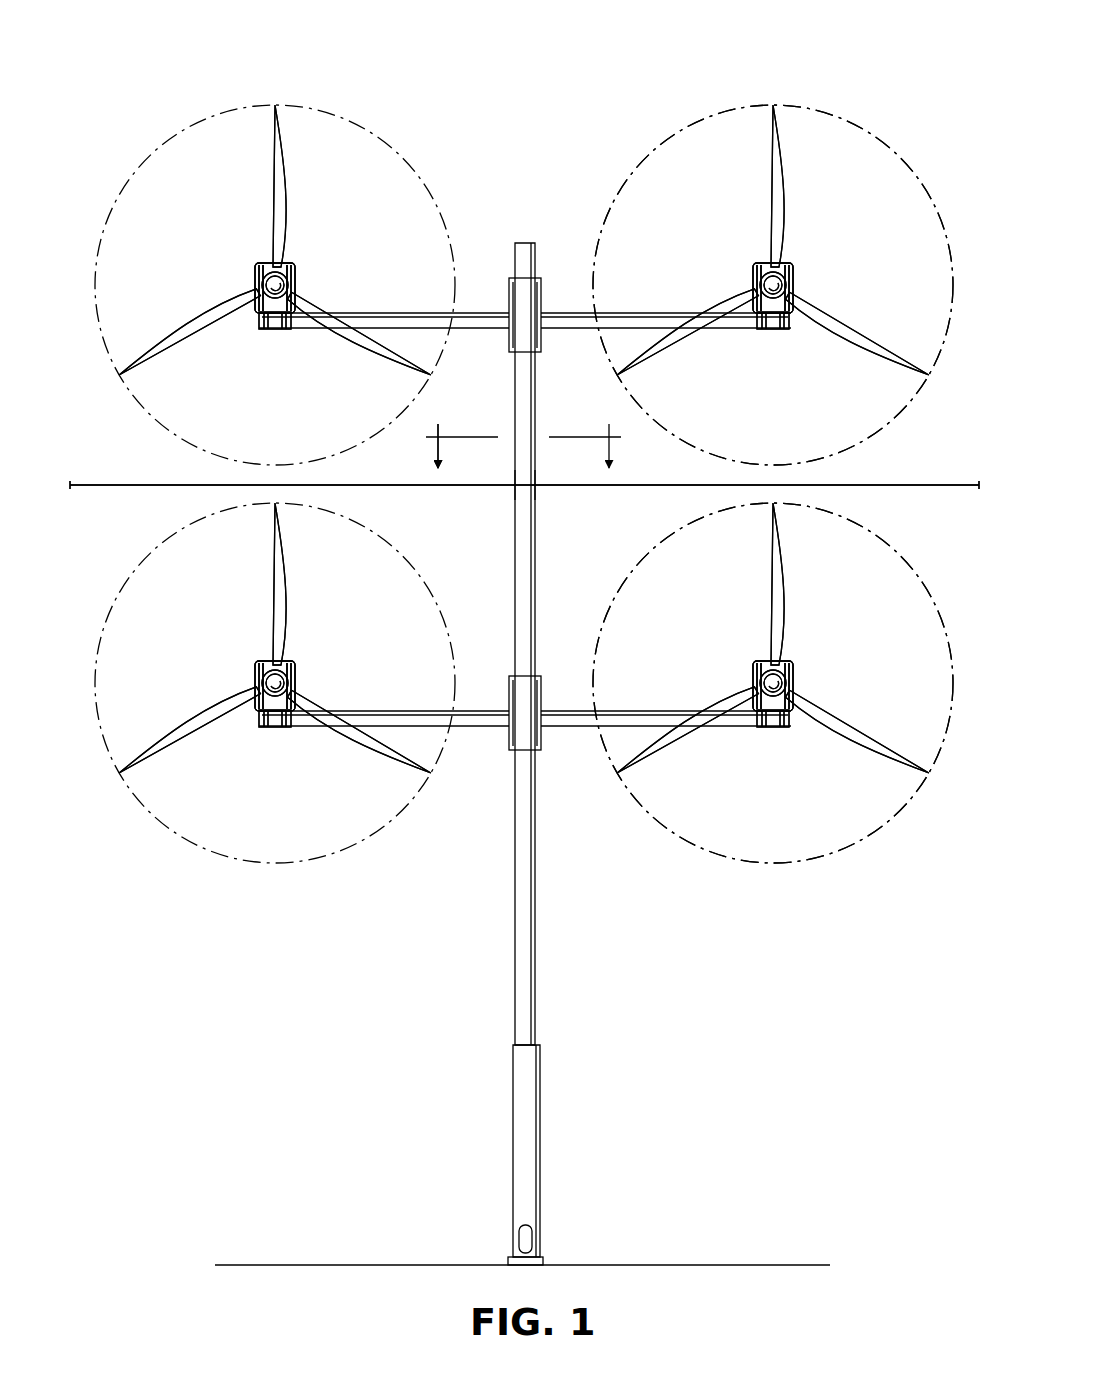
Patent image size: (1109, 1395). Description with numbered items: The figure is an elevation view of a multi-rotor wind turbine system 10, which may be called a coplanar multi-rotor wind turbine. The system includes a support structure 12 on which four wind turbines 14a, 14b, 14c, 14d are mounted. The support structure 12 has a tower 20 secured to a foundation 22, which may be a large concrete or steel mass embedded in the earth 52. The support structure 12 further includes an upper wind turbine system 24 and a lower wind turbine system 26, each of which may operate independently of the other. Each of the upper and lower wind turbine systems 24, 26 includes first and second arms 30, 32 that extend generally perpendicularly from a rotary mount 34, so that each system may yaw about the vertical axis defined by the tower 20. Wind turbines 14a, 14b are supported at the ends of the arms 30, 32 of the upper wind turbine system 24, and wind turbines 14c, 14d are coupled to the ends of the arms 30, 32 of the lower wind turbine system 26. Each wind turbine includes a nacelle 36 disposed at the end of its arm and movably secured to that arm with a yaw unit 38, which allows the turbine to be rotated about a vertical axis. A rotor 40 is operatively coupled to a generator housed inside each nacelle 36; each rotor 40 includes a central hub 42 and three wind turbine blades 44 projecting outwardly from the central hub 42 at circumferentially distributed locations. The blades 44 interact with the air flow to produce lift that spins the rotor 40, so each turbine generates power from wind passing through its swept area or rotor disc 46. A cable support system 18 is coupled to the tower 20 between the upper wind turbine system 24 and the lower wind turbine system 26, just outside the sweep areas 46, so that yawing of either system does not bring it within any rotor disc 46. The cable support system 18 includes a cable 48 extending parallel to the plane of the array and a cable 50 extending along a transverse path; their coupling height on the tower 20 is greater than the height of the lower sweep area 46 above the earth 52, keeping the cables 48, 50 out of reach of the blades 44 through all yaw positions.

The wind turbine system 10 is at (183, 76).
The support structure 12 is at (524, 240).
The wind turbine 14a is at (128, 142).
The wind turbine 14b is at (905, 142).
The wind turbine 14c is at (128, 540).
The wind turbine 14d is at (905, 540).
The cable support system 18 is at (962, 480).
The tower 20 is at (541, 1105).
The foundation 22 is at (510, 1262).
The upper wind turbine system 24 is at (926, 215).
The lower wind turbine system 26 is at (926, 613).
The first arm 30 is at (480, 312).
The second arm 32 is at (565, 312).
The rotary mount 34 is at (526, 340).
The nacelle 36 is at (295, 268).
The yaw unit 38 is at (278, 331).
The rotor 40 is at (292, 286).
The central hub 42 is at (258, 276).
The wind turbine blade 44 is at (284, 206).
The rotor disc 46 is at (338, 110).
The cable 48 is at (932, 484).
The cable 50 is at (515, 483).
The earth 52 is at (735, 1264).